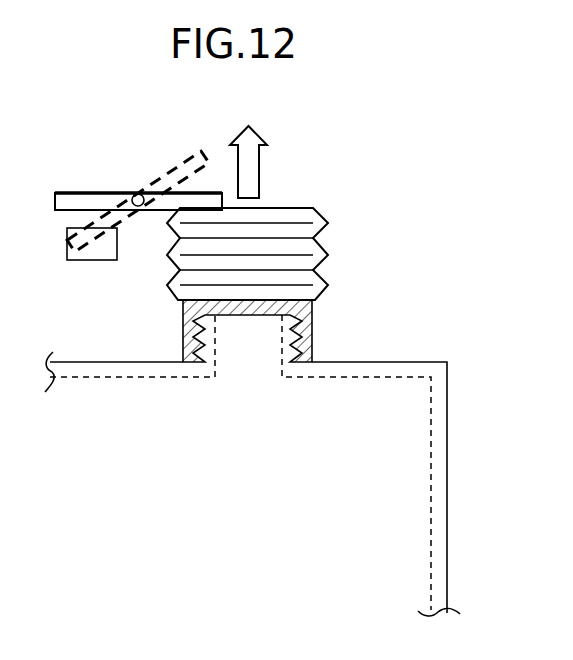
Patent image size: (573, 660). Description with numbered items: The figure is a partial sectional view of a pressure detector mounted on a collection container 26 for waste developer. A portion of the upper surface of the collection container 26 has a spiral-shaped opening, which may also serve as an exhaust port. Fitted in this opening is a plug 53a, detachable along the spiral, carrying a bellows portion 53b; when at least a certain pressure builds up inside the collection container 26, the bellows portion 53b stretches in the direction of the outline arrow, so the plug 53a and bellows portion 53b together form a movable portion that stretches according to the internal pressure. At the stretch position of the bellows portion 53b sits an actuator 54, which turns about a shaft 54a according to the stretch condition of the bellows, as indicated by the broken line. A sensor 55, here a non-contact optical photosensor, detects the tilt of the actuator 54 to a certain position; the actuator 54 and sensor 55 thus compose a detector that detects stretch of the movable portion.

The collection container 26 is at (447, 462).
The plug 53a is at (308, 335).
The bellows portion 53b is at (287, 214).
The actuator 54 is at (75, 199).
The shaft 54a is at (136, 193).
The sensor 55 is at (97, 260).